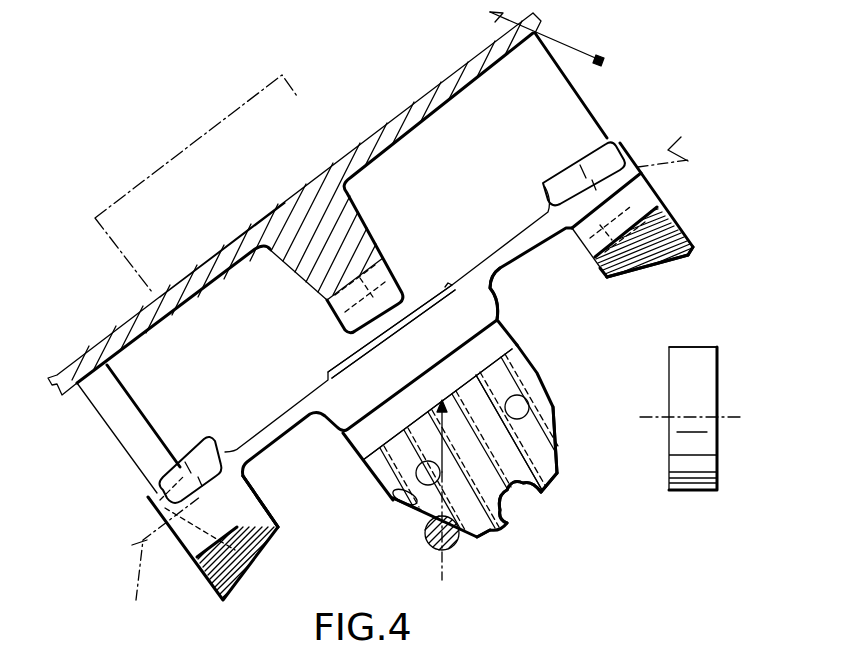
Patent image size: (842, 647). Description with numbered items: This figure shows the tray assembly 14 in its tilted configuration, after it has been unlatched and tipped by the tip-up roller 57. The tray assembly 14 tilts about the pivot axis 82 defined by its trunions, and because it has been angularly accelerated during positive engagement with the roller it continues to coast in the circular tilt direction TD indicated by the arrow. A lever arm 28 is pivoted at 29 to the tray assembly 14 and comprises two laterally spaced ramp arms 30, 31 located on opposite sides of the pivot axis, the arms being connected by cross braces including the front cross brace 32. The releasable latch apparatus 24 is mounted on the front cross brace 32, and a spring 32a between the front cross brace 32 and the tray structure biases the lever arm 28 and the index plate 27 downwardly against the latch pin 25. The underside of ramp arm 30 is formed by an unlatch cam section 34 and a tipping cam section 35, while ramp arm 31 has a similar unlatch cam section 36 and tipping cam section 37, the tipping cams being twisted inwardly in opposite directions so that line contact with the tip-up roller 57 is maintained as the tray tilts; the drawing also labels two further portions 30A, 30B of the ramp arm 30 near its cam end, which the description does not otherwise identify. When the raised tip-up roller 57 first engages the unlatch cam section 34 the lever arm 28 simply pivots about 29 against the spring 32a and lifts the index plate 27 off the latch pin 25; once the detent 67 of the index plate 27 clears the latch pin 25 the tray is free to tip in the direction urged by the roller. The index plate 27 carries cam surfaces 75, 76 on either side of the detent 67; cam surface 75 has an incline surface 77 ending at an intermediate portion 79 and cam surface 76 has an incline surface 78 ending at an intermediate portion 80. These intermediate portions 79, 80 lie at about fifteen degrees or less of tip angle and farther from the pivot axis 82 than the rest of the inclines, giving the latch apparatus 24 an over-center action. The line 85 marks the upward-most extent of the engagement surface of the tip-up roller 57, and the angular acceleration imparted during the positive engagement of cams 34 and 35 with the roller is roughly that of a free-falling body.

The tray assembly 14 is at (640, 60).
The circular tilt direction TD is at (560, 40).
The lever arm 28 is at (500, 240).
The pivot 29 is at (693, 162).
The ramp arm 30 is at (666, 231).
The insert corner 30A is at (693, 247).
The insert corner 30B is at (612, 278).
The front cross brace 32 is at (473, 293).
The spring 32a is at (413, 282).
The unlatch cam section 34 is at (657, 202).
The tipping cam section 35 is at (647, 250).
The unlatch cam section 36 is at (252, 507).
The tipping cam section 37 is at (247, 547).
The ramp arm 31 is at (260, 565).
The cam surface 76 is at (562, 443).
The incline surface 78 is at (550, 402).
The index plate 27 is at (512, 451).
The releasable latch apparatus 24 is at (570, 478).
The intermediate portion 80 is at (557, 475).
The detent 67 is at (520, 503).
The intermediate portion 79 is at (477, 537).
The latch pin 25 is at (453, 550).
The pivot axis 82 is at (457, 490).
The incline surface 77 is at (393, 497).
The cam surface 75 is at (413, 522).
The tip-up roller 57 is at (707, 368).
The line 85 is at (693, 345).